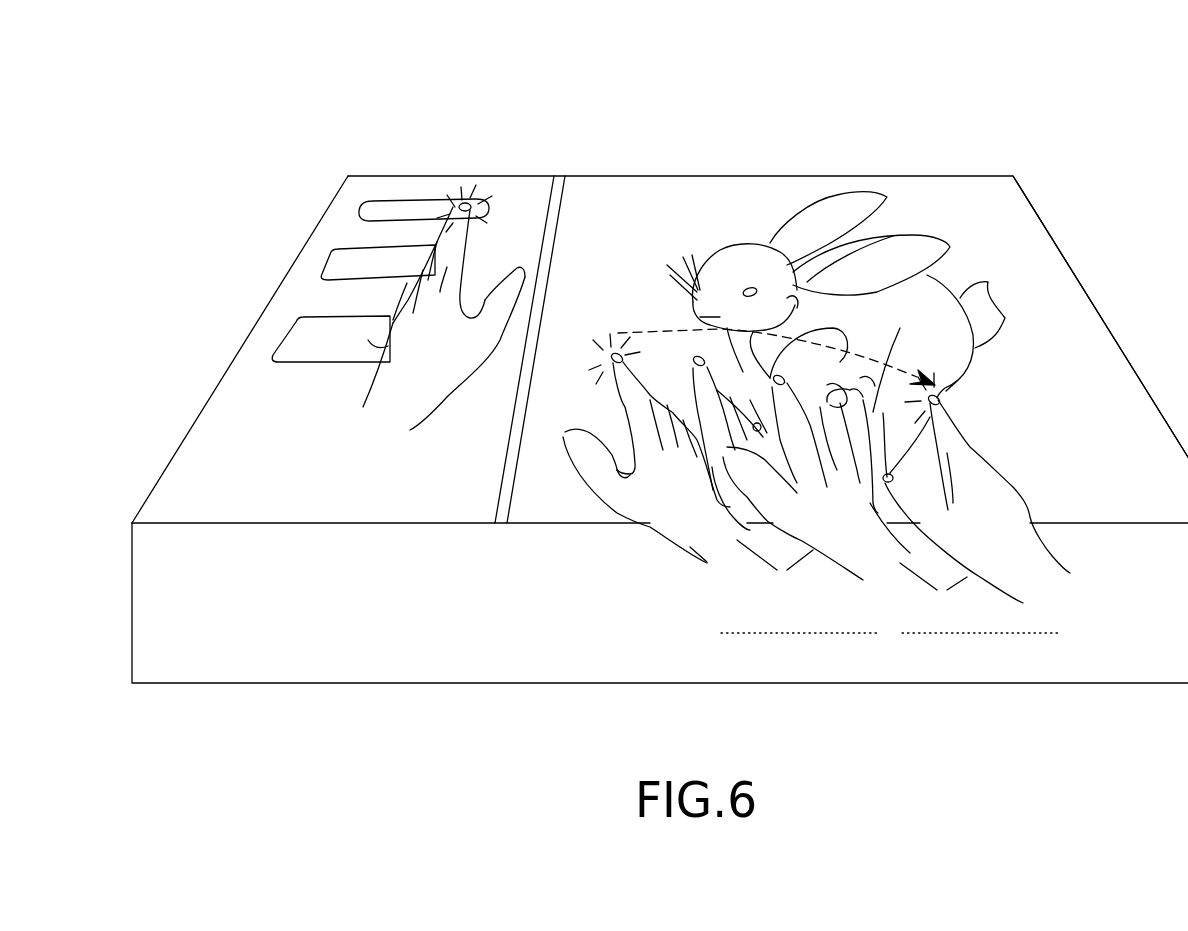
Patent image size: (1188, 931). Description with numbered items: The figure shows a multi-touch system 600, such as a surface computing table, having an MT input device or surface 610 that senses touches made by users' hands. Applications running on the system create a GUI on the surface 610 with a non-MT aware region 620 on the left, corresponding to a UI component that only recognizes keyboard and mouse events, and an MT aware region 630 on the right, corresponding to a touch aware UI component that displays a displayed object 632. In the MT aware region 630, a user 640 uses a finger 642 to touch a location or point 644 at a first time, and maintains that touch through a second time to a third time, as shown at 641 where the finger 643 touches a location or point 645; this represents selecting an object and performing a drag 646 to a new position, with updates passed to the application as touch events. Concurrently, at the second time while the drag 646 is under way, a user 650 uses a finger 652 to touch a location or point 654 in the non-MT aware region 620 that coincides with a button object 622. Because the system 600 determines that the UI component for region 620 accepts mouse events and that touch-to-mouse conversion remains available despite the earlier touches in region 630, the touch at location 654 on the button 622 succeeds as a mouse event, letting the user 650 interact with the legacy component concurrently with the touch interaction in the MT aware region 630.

The multi-touch system 600 is at (624, 360).
The MT input device or surface 610 is at (645, 183).
The non-MT aware region 620 is at (162, 509).
The object 622 is at (372, 207).
The MT aware region 630 is at (1060, 272).
The displayed object 632 is at (915, 238).
The user 640 is at (636, 450).
The user at third time 641 is at (963, 472).
The finger 642 is at (613, 397).
The finger 643 is at (963, 410).
The touch location or point 644 is at (603, 356).
The touch location or point 645 is at (940, 398).
The drag 646 is at (861, 354).
The user 650 is at (373, 360).
The finger 652 is at (462, 228).
The touch location or point 654 is at (468, 200).